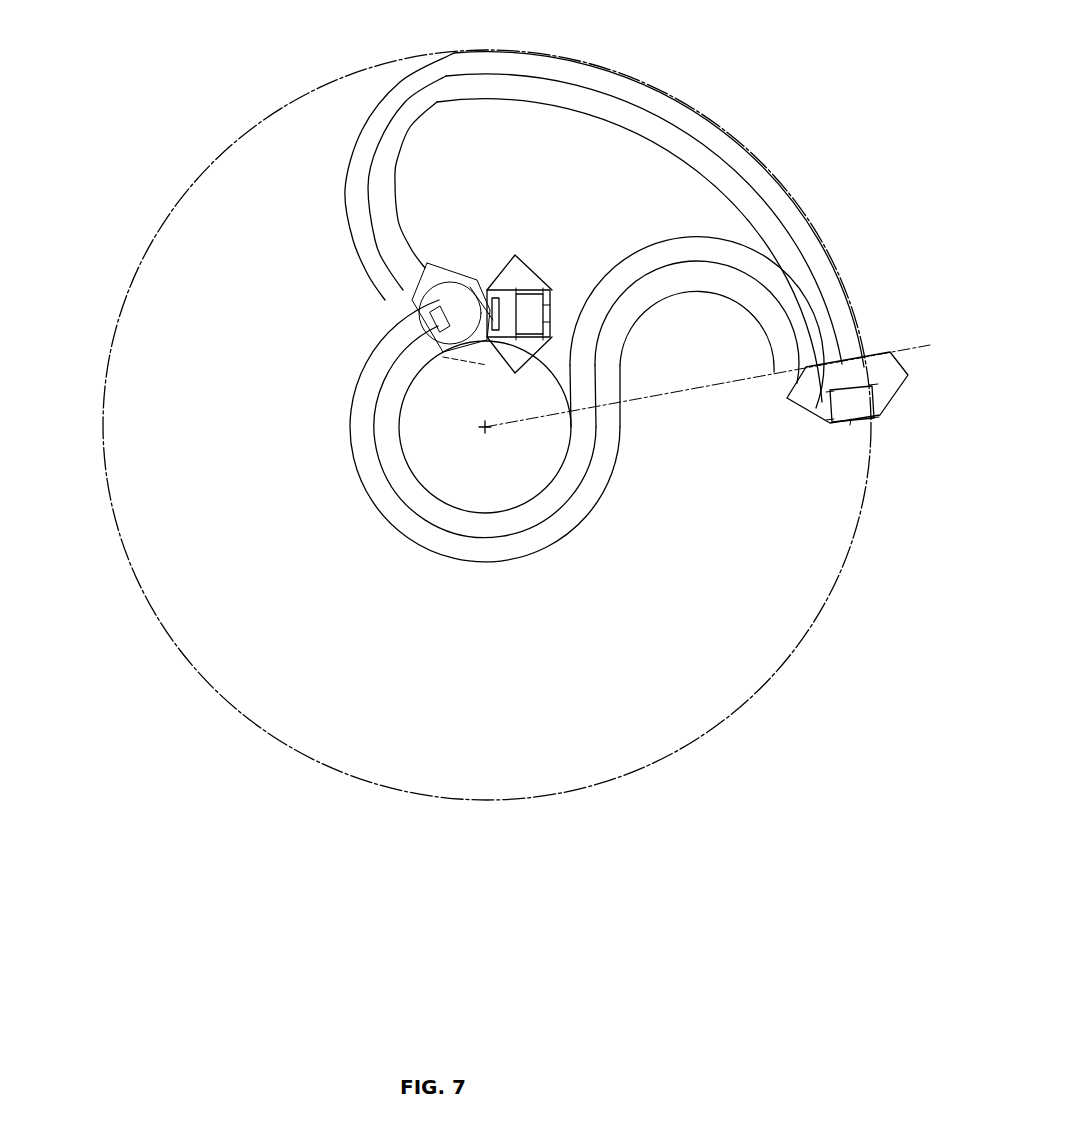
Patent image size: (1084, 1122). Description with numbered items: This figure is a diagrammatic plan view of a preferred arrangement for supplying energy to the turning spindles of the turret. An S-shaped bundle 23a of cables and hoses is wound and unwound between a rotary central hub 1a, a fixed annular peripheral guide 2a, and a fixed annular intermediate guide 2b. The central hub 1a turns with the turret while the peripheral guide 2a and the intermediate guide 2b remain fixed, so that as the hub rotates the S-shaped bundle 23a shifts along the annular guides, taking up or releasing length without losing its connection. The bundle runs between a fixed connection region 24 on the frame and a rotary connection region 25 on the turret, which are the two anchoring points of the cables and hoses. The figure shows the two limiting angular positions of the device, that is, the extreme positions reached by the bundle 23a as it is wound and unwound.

The fixed annular peripheral guide 2a is at (234, 153).
The fixed annular intermediate guide 2b is at (603, 502).
The rotary central hub 1a is at (483, 488).
The S-shaped bundle of cables and hoses 23a is at (675, 267).
The fixed connection region 24 is at (847, 405).
The rotary connection region 25 is at (487, 306).